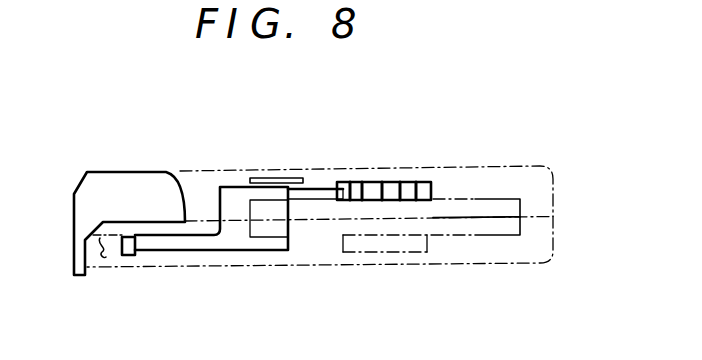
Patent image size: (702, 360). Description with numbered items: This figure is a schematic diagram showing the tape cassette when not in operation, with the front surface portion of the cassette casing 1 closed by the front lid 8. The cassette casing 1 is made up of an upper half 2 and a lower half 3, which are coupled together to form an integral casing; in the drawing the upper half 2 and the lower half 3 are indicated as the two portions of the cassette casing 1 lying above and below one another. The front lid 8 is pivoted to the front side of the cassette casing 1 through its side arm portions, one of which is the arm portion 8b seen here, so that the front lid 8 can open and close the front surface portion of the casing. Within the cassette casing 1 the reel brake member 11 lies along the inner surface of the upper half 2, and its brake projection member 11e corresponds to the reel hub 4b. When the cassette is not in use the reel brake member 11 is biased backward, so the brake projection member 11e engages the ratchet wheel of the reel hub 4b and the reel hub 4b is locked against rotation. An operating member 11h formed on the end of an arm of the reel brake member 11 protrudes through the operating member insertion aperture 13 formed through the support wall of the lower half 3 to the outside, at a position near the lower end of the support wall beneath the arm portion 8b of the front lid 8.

The cassette casing 1 is at (600, 168).
The upper half 2 is at (553, 198).
The lower half 3 is at (553, 235).
The reel hub 4b is at (398, 181).
The front lid 8 is at (106, 194).
The arm portion 8b is at (143, 180).
The reel brake member 11 is at (234, 218).
The brake projection member 11e is at (323, 187).
The operating member 11h is at (119, 256).
The operating member insertion aperture 13 is at (101, 262).